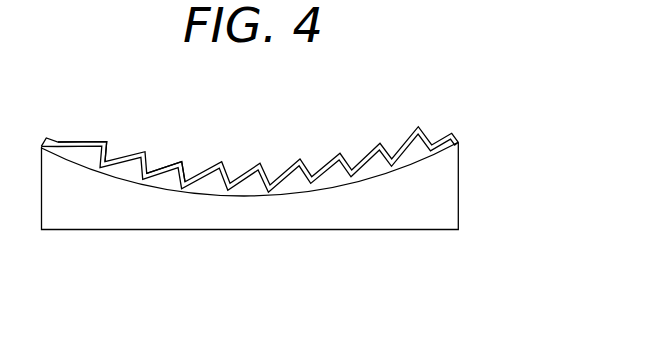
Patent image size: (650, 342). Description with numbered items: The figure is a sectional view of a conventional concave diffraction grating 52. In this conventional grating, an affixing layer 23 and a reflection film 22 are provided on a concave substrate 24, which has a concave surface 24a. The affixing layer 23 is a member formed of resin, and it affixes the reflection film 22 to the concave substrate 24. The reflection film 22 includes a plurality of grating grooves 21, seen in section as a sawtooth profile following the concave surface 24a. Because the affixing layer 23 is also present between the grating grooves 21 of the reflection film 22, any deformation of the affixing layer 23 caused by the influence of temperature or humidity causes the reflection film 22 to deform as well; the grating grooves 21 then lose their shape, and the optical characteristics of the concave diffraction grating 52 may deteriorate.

The grating grooves 21 is at (397, 141).
The reflection film 22 is at (89, 139).
The affixing layer 23 is at (181, 160).
The concave substrate 24 is at (250, 231).
The concave surface 24a is at (318, 192).
The concave diffraction grating 52 is at (240, 188).